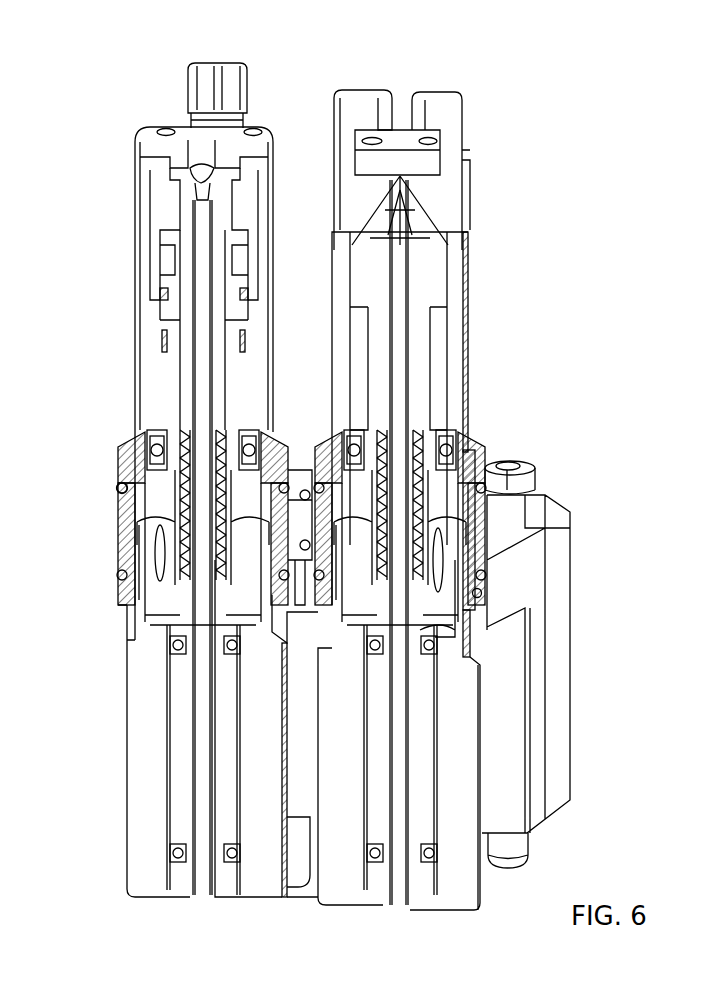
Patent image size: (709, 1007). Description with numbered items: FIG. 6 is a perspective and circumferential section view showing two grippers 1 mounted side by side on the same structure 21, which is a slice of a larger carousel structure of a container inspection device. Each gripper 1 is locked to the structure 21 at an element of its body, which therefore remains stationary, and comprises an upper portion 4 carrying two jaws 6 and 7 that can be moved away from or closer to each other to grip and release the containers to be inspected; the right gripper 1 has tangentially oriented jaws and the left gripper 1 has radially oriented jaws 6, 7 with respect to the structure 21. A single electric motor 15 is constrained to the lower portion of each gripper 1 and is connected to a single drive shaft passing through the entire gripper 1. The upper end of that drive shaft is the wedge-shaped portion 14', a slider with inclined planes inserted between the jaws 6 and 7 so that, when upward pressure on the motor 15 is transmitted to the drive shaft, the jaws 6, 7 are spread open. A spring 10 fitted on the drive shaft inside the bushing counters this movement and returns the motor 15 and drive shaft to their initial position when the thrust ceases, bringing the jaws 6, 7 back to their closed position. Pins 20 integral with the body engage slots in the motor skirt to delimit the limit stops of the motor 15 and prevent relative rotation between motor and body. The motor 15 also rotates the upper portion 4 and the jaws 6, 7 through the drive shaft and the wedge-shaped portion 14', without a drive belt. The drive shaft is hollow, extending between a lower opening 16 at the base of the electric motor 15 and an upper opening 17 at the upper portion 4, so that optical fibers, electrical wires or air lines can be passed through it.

The gripper 1 is at (108, 238).
The upper portion 4 is at (481, 367).
The jaw 6 is at (358, 90).
The jaw 7 is at (236, 66).
The spring 10 is at (133, 496).
The wedge-shaped portion 14' is at (439, 390).
The electric motor 15 is at (142, 815).
The lower opening 16 is at (203, 882).
The upper opening 17 is at (200, 148).
The pins 20 is at (172, 540).
The structure 21 is at (574, 553).